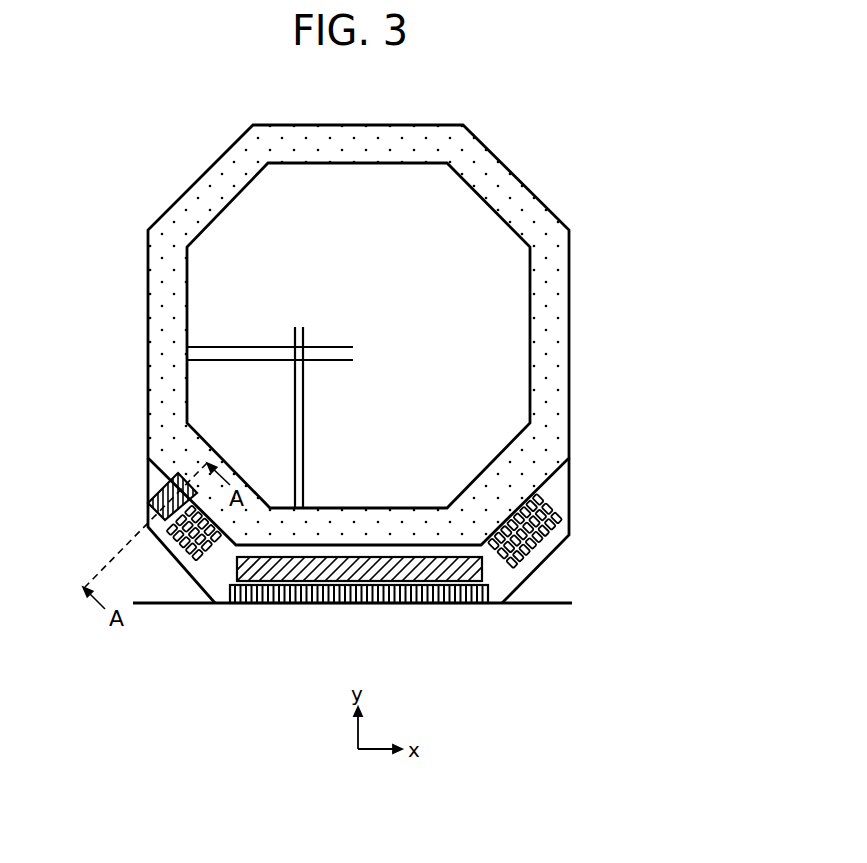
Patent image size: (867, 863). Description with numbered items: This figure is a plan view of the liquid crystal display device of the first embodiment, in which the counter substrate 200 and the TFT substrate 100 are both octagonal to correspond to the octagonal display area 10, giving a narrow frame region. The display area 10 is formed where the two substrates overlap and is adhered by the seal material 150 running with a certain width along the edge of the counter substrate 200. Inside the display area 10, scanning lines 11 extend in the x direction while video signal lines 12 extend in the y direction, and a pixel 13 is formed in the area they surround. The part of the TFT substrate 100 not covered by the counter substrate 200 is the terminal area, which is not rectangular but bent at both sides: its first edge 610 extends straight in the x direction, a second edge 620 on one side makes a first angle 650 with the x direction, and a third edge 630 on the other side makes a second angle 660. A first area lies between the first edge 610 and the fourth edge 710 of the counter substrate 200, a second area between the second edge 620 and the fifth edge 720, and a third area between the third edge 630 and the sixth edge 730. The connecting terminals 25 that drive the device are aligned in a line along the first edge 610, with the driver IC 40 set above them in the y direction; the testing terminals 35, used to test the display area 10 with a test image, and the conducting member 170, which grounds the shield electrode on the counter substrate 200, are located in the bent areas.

The display area 10 is at (500, 293).
The scanning lines 11 is at (240, 347).
The video signal lines 12 is at (303, 413).
The pixel 13 is at (300, 352).
The connecting terminals 25 is at (495, 603).
The testing terminals 35 is at (178, 547).
The driver IC 40 is at (295, 572).
The TFT substrate 100 is at (399, 335).
The seal material 150 is at (555, 360).
The conducting member 170 is at (150, 485).
The counter substrate 200 is at (399, 335).
The first edge 610 is at (252, 595).
The second edge 620 is at (180, 575).
The third edge 630 is at (563, 545).
The first angle 650 is at (193, 595).
The second angle 660 is at (520, 585).
The fourth edge 710 is at (385, 543).
The fifth edge 720 is at (232, 523).
The sixth edge 730 is at (517, 508).